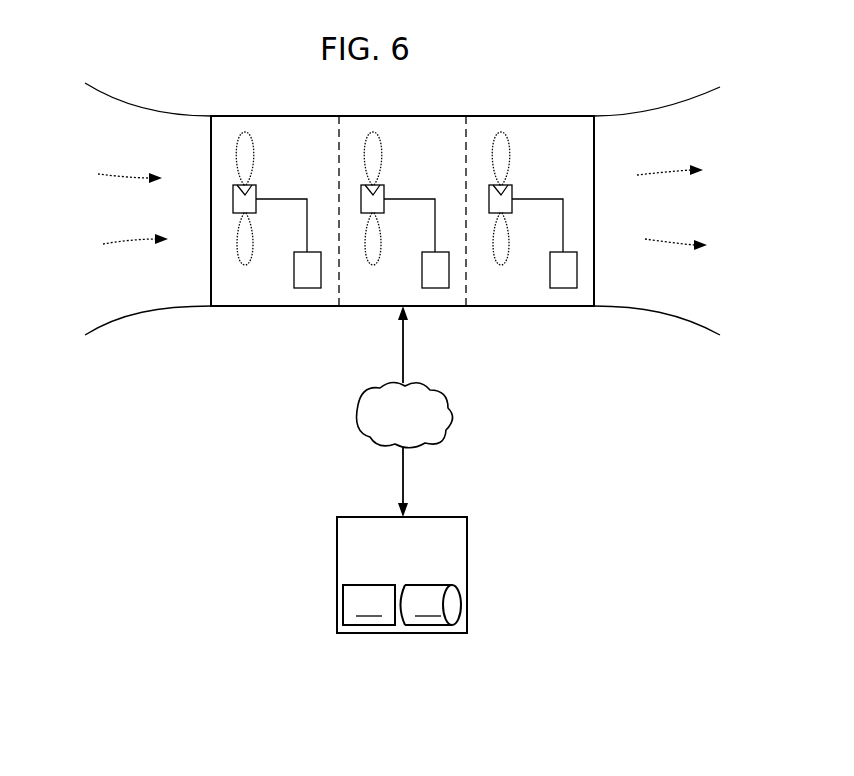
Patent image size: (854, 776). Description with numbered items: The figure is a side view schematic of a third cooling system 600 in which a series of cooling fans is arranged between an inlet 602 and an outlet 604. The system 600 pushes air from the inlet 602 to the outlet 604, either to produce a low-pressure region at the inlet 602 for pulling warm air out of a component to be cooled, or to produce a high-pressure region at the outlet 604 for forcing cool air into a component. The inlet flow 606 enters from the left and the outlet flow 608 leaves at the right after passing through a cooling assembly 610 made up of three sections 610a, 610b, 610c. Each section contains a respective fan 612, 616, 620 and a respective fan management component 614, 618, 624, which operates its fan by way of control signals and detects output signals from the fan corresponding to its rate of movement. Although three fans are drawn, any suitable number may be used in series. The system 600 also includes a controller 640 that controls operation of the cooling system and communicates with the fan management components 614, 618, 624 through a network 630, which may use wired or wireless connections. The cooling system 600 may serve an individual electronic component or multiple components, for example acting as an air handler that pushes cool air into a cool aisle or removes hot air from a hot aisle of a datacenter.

The third cooling system 600 is at (461, 57).
The inlet 602 is at (166, 100).
The outlet 604 is at (643, 100).
The inlet flow 606 is at (122, 177).
The outlet flow 608 is at (662, 242).
The cooling assembly 610 is at (382, 318).
The first section 610a is at (255, 307).
The second section 610b is at (416, 308).
The third section 610c is at (510, 307).
The first fan 612 is at (256, 194).
The first fan management component 614 is at (309, 278).
The second fan 616 is at (375, 138).
The second fan management component 618 is at (437, 278).
The third fan 620 is at (503, 140).
The third fan management component 624 is at (564, 278).
The network 630 is at (452, 418).
The controller 640 is at (370, 568).